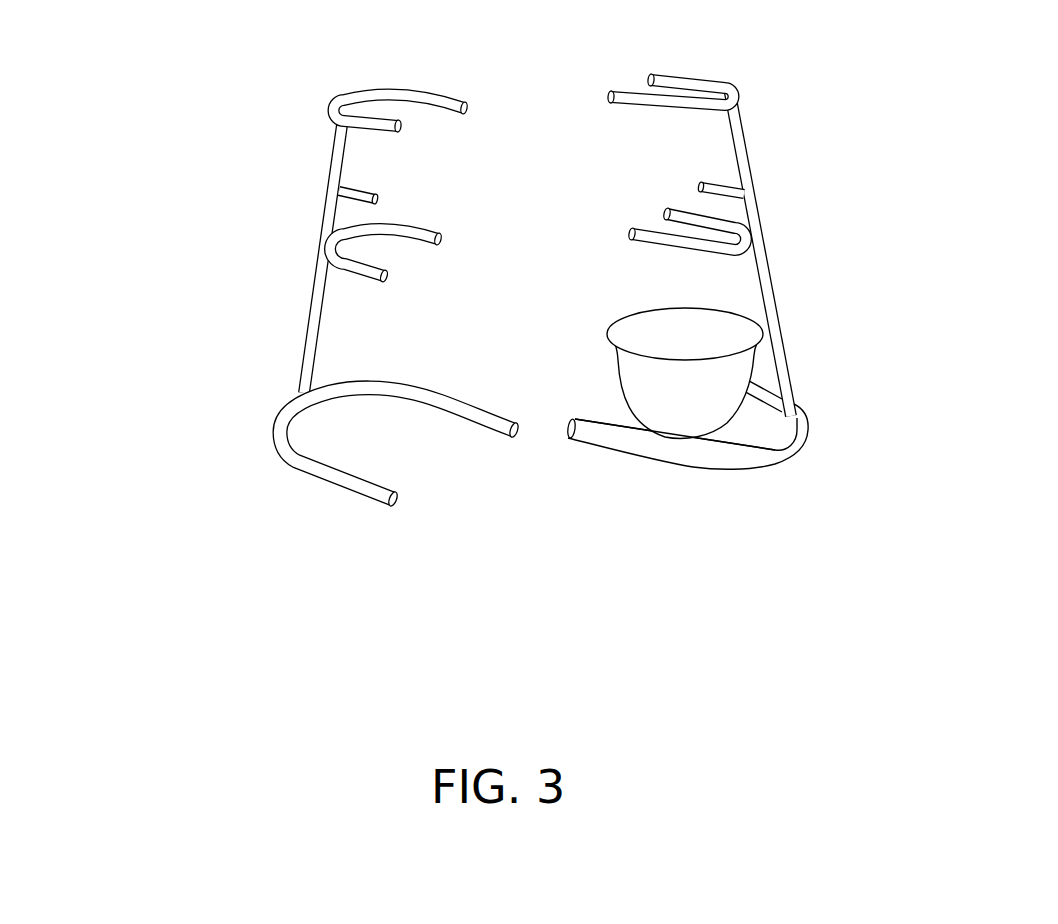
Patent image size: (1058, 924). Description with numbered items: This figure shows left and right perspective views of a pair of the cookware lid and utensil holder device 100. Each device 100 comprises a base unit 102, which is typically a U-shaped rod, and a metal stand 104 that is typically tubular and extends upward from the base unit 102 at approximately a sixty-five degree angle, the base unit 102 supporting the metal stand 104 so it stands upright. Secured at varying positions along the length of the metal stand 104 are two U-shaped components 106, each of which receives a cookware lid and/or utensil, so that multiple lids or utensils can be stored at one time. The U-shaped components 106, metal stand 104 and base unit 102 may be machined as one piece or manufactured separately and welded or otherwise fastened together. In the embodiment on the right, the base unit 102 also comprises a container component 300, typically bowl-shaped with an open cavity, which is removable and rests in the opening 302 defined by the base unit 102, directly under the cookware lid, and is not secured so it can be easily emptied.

The cookware lid and utensil holder device 100 is at (503, 300).
The base unit 102 is at (333, 471).
The metal stand 104 is at (316, 326).
The U-shaped component 106 is at (432, 98).
The container component 300 is at (720, 338).
The opening 302 is at (788, 440).